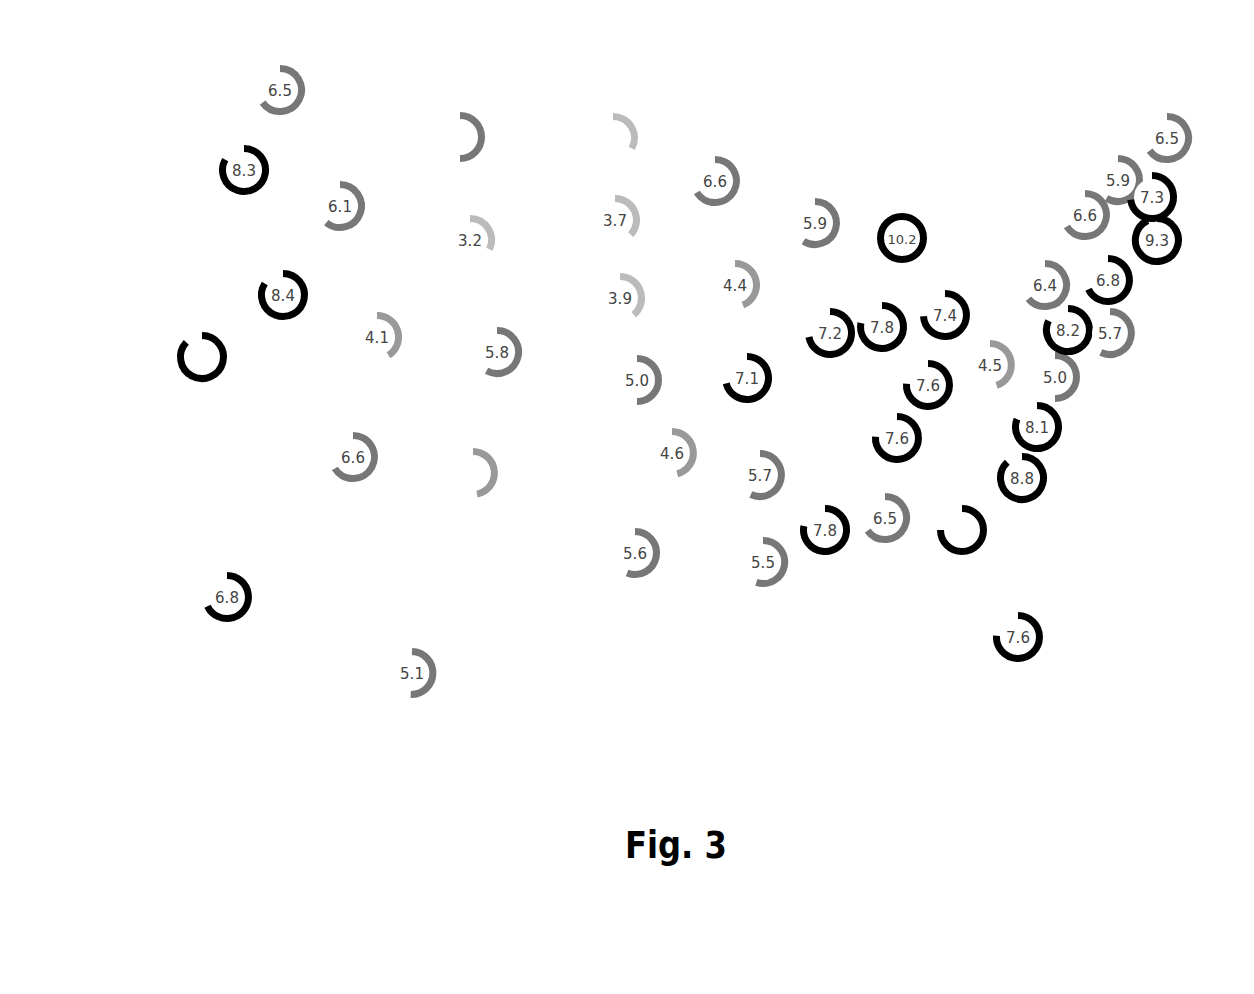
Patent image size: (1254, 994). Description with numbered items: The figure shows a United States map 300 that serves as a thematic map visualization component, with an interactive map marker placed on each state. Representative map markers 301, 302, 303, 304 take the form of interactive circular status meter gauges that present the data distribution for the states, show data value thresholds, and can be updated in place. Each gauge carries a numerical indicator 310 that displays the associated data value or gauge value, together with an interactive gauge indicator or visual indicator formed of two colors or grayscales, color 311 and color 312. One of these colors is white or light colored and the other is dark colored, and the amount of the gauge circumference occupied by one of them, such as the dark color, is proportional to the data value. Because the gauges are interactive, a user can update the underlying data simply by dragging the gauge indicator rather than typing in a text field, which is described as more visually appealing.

The United States map 300 is at (952, 112).
The map marker 301 is at (183, 370).
The map marker 302 is at (467, 478).
The map marker 303 is at (987, 534).
The map marker 304 is at (627, 128).
The numerical indicator 310 is at (448, 128).
The color 311 is at (483, 113).
The color 312 is at (436, 138).